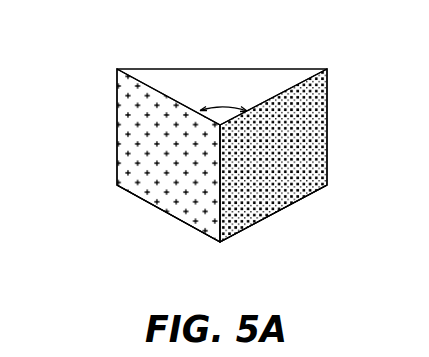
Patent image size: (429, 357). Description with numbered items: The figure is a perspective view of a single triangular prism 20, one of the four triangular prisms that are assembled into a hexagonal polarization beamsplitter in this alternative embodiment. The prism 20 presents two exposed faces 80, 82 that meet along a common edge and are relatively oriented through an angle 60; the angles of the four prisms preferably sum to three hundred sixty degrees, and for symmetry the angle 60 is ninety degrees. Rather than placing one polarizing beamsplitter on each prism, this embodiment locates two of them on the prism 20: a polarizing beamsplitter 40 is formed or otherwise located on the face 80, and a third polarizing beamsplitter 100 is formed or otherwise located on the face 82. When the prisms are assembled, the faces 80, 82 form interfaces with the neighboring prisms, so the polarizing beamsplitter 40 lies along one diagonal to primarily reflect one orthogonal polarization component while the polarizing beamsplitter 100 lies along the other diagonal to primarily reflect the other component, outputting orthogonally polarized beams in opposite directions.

The triangular prism 20 is at (267, 83).
The polarizing beamsplitter 40 is at (118, 147).
The angle 60 is at (213, 108).
The exposed face 80 is at (178, 207).
The exposed face 82 is at (260, 208).
The third polarizing beamsplitter 100 is at (318, 155).